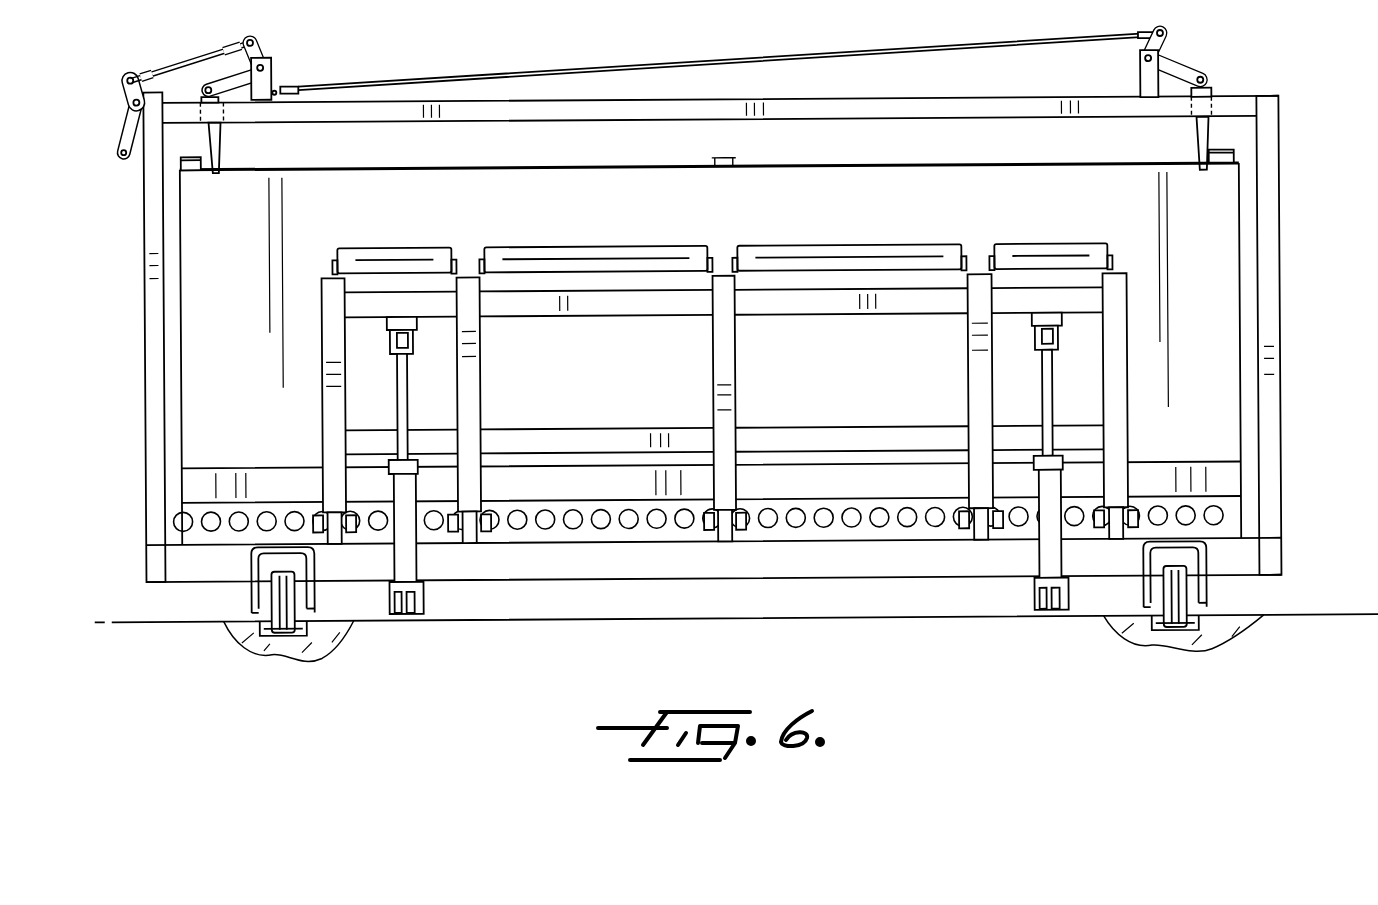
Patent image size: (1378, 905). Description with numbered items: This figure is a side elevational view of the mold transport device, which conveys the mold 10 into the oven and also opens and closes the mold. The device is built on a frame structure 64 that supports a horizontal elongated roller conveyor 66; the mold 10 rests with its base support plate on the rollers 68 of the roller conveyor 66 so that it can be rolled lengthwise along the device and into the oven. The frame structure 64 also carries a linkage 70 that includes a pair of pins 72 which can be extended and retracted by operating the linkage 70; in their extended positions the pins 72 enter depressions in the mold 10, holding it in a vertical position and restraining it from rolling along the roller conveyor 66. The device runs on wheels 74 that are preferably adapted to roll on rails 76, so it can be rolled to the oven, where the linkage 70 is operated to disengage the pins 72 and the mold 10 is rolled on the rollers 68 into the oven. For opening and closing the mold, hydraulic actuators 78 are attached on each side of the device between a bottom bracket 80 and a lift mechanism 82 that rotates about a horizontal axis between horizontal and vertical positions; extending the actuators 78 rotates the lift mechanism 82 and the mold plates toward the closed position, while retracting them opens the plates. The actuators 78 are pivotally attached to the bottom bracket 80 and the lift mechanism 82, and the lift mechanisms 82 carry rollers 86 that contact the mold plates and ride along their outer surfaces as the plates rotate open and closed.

The mold 10 is at (921, 152).
The frame structure 64 is at (150, 380).
The roller conveyor 66 is at (190, 541).
The rollers 68 is at (178, 524).
The linkage 70 is at (838, 52).
The pins 72 is at (218, 157).
The wheels 74 is at (278, 598).
The rails 76 is at (283, 633).
The hydraulic actuators 78 is at (410, 555).
The bottom bracket 80 is at (400, 618).
The lift mechanism 82 is at (330, 429).
The rollers 86 is at (440, 248).